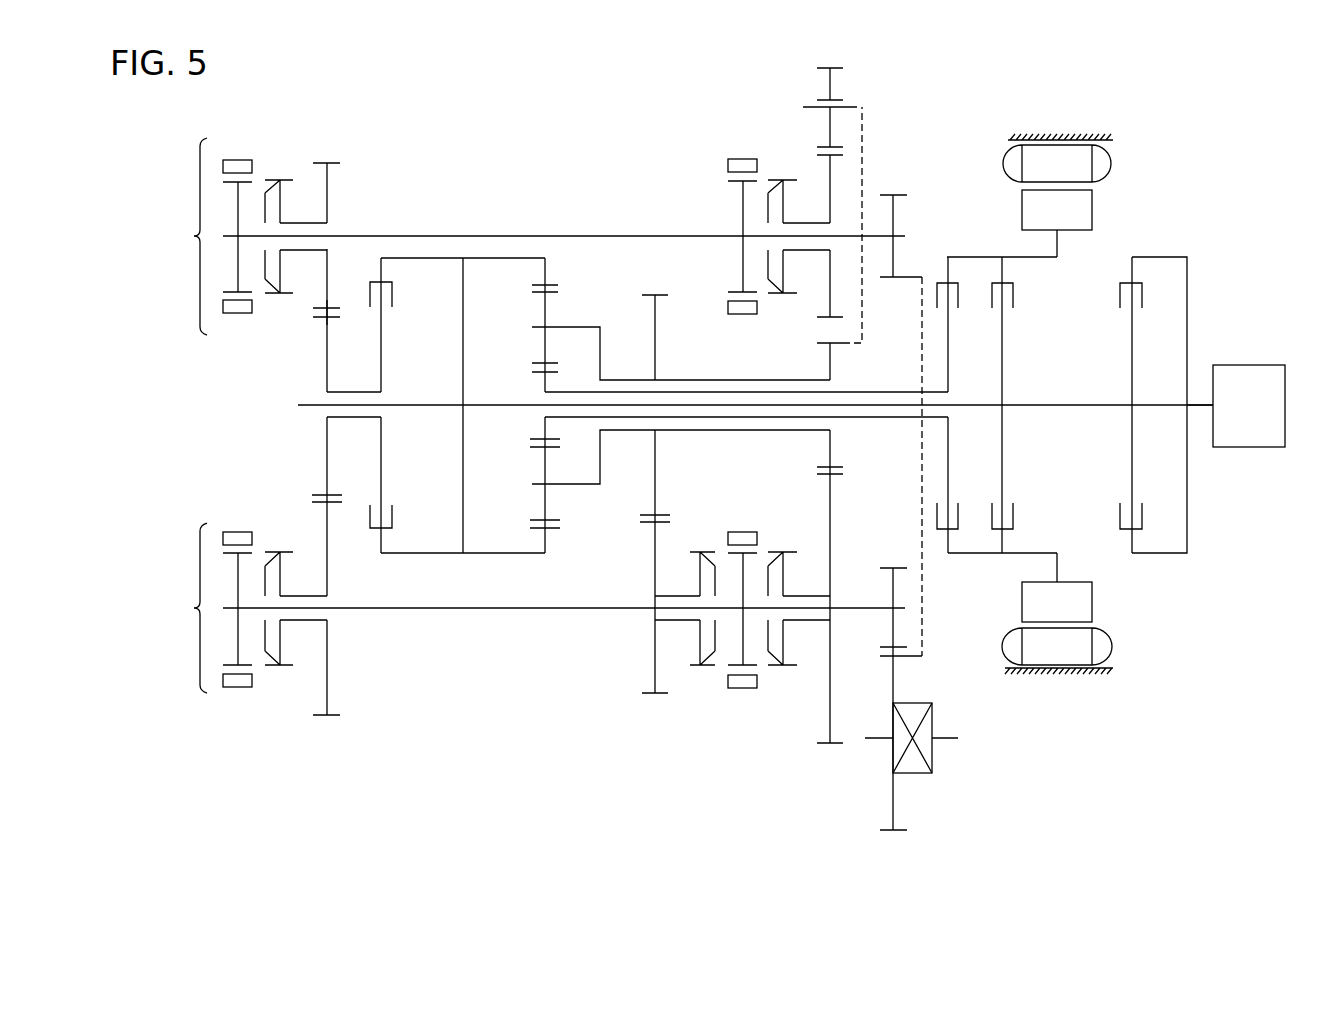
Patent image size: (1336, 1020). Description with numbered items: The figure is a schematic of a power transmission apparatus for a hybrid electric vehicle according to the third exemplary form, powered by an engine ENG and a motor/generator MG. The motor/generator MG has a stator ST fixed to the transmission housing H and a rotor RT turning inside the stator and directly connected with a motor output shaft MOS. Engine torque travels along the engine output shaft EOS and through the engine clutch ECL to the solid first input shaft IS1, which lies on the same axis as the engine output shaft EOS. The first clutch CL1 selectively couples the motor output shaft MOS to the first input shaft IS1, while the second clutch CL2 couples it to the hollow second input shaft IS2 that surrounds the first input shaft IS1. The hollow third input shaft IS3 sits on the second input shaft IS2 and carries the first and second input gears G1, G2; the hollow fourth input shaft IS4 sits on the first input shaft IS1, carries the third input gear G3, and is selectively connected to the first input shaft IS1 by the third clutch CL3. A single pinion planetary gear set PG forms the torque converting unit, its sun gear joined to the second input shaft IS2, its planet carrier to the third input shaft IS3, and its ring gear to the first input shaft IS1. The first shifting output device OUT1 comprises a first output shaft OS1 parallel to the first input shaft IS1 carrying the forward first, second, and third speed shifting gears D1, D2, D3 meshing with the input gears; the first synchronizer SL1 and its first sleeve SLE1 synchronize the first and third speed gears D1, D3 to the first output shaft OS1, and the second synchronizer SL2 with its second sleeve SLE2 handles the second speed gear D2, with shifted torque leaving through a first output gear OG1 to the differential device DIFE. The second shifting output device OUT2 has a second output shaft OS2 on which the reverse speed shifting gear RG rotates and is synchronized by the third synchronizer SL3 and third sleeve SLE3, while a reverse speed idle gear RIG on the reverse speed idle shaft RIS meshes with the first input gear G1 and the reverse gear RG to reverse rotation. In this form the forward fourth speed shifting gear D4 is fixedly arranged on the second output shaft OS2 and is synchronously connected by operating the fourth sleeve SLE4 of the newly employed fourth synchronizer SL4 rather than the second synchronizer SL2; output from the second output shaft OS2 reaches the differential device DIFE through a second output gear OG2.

The second output shaft OS2 is at (467, 234).
The first output shaft OS1 is at (633, 607).
The second shifting output device OUT2 is at (180, 236).
The first shifting output device OUT1 is at (180, 608).
The fourth synchronizer SL4 is at (269, 197).
The fourth sleeve SLE4 is at (238, 159).
The forward fourth speed shifting gear D4 is at (331, 176).
The third input gear G3 is at (326, 318).
The fourth input shaft IS4 is at (353, 419).
The third clutch CL3 is at (370, 270).
The planetary gear set PG is at (605, 365).
The second input gear G2 is at (658, 294).
The forward third speed shifting gear D3 is at (653, 667).
The third synchronizer SL3 is at (751, 202).
The third sleeve SLE3 is at (750, 210).
The reverse speed idle gear RIG is at (840, 66).
The reverse speed idle shaft RIS is at (817, 103).
The reverse speed shifting gear RG is at (830, 178).
The first input gear G1 is at (828, 352).
The first input shaft IS1 is at (890, 400).
The second input shaft IS2 is at (873, 420).
The third input shaft IS3 is at (747, 430).
The second output gear OG2 is at (893, 215).
The forward first speed shifting gear D1 is at (832, 702).
The first synchronizer SL1 is at (742, 650).
The first sleeve SLE1 is at (747, 688).
The second synchronizer SL2 is at (249, 651).
The second sleeve SLE2 is at (243, 688).
The forward second speed shifting gear D2 is at (328, 655).
The first output gear OG1 is at (890, 582).
The differential device DIFE is at (933, 757).
The second clutch CL2 is at (938, 270).
The first clutch CL1 is at (995, 270).
The motor output shaft MOS is at (1042, 258).
The motor/generator MG is at (1082, 187).
The stator ST is at (1057, 163).
The rotor RT is at (1057, 210).
The transmission housing H is at (1079, 138).
The engine clutch ECL is at (1159, 283).
The engine output shaft EOS is at (1198, 400).
The engine ENG is at (1249, 406).